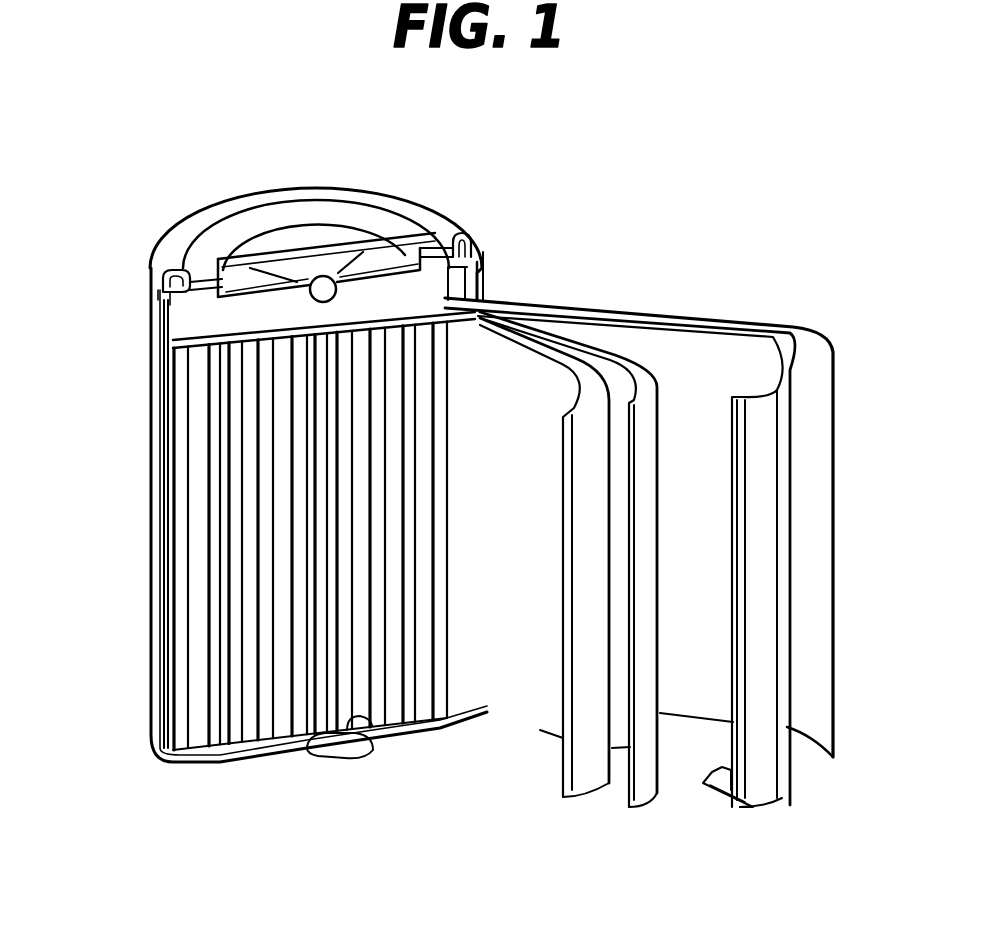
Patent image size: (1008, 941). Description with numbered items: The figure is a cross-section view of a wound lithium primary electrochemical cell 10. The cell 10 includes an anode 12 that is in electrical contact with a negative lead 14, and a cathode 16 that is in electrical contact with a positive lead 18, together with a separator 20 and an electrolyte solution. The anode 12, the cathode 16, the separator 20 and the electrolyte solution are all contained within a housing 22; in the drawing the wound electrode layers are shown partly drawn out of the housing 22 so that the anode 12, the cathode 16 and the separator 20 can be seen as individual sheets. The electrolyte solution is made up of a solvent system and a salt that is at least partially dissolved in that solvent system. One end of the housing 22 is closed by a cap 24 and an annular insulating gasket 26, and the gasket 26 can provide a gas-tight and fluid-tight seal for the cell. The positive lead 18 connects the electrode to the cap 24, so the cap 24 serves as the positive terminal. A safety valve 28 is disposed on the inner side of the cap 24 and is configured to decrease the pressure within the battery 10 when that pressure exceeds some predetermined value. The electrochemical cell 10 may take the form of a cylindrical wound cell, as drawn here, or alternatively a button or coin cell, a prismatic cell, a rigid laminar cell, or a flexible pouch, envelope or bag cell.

The lithium primary electrochemical cell 10 is at (703, 195).
The anode 12 is at (789, 744).
The negative lead 14 is at (766, 788).
The cathode 16 is at (592, 786).
The positive lead 18 is at (345, 300).
The separator 20 is at (657, 410).
The housing 22 is at (173, 762).
The cap 24 is at (306, 228).
The annular insulating gasket 26 is at (163, 278).
The safety valve 28 is at (385, 265).